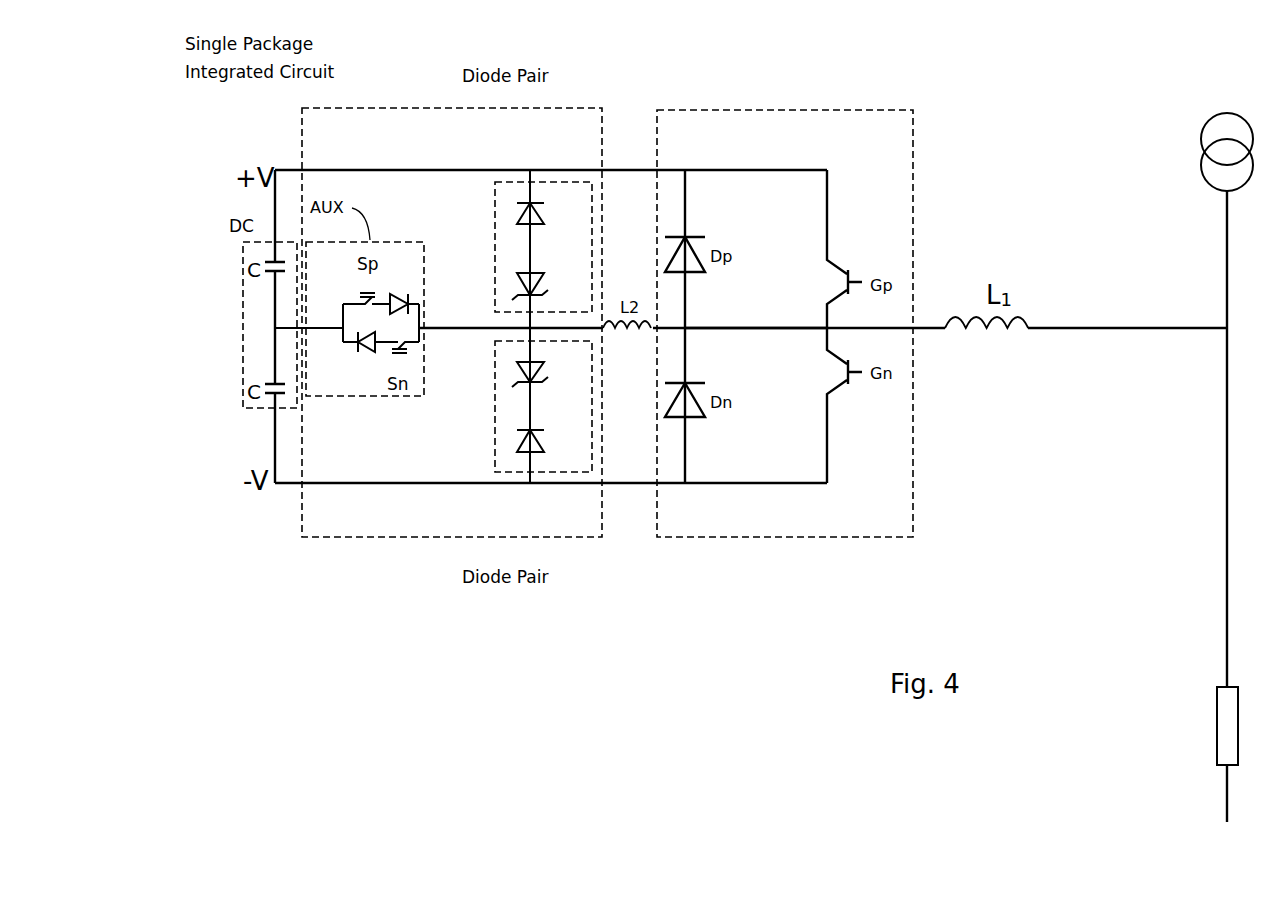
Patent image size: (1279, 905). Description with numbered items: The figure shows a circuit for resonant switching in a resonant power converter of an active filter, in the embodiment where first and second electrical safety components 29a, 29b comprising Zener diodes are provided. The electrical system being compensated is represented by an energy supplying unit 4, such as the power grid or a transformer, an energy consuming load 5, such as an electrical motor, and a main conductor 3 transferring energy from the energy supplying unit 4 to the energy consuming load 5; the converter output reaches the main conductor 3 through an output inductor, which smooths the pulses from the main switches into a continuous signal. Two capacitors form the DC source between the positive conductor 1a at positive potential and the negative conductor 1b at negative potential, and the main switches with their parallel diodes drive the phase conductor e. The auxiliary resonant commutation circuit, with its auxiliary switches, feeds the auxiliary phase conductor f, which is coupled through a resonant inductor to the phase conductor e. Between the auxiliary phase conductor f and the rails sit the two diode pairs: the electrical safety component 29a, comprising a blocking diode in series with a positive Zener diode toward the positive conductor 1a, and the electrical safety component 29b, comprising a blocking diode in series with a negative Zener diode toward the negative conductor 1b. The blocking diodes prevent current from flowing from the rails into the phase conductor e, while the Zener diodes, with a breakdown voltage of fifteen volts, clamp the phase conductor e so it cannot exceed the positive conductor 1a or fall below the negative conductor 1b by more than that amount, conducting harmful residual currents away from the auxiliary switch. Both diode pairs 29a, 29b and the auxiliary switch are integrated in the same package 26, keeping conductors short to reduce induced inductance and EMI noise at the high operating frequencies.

The package 26 is at (416, 106).
The electrical safety component 29a is at (548, 178).
The electrical safety component 29b is at (557, 477).
The positive conductor 1a is at (503, 168).
The negative conductor 1b is at (452, 485).
The energy supplying unit 4 is at (1200, 150).
The main conductor 3 is at (1227, 405).
The energy consuming load 5 is at (1217, 702).
The phase conductor e is at (783, 327).
The auxiliary phase conductor f is at (485, 325).